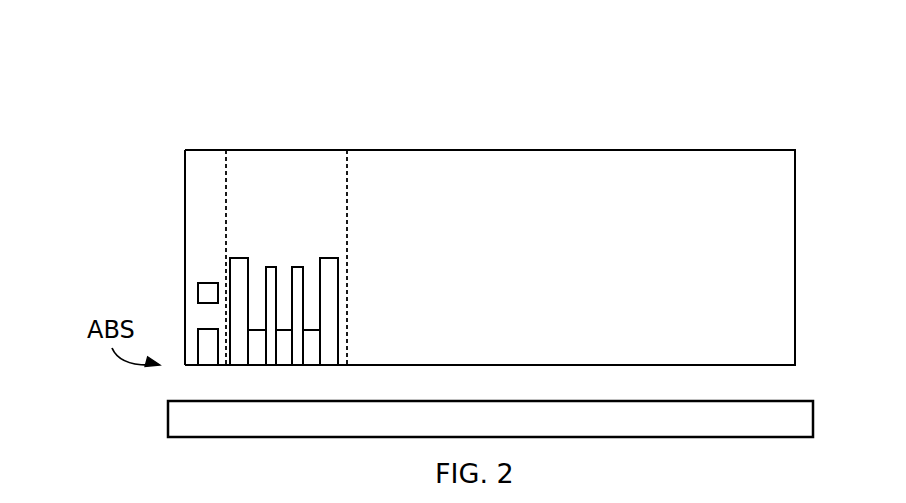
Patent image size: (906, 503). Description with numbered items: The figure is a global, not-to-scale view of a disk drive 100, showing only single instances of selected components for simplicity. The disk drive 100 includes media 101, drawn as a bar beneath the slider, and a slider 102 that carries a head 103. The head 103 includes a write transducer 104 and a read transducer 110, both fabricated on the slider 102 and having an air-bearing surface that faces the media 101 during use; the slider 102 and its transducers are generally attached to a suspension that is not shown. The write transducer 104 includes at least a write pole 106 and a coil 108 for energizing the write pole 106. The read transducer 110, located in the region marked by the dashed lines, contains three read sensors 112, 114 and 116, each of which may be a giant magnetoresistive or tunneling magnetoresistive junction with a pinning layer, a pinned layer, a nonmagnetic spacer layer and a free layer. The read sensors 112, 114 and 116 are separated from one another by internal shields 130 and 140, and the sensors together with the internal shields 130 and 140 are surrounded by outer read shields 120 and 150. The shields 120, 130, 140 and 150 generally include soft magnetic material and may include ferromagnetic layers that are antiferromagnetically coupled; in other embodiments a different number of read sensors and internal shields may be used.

The disk drive 100 is at (495, 53).
The media 101 is at (168, 433).
The slider 102 is at (795, 222).
The head 103 is at (68, 228).
The write transducer 104 is at (185, 203).
The write pole 106 is at (198, 329).
The coil 108 is at (198, 283).
The read transducer 110 is at (348, 185).
The read sensor 112 is at (257, 365).
The read sensor 114 is at (283, 330).
The read sensor 116 is at (315, 365).
The read shield 120 is at (240, 258).
The shield 130 is at (271, 267).
The shield 140 is at (297, 267).
The read shield 150 is at (338, 277).